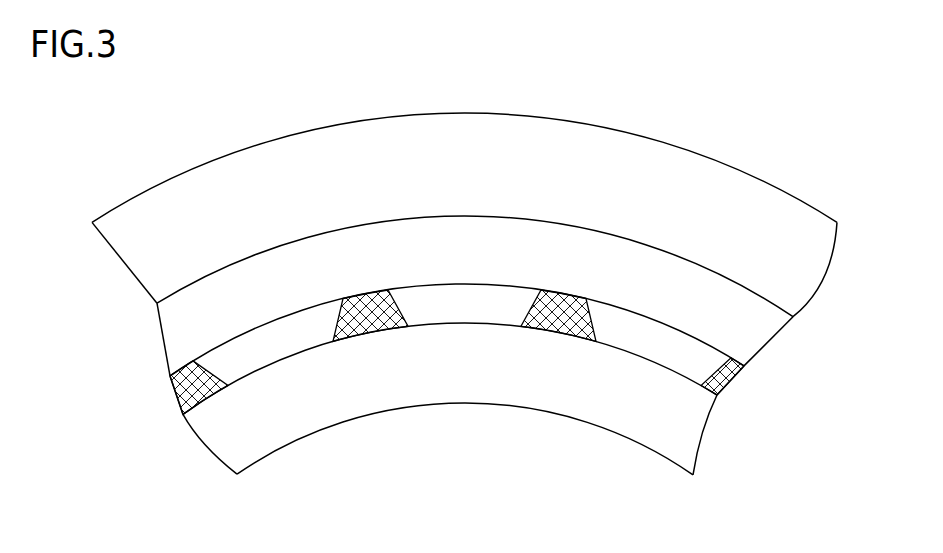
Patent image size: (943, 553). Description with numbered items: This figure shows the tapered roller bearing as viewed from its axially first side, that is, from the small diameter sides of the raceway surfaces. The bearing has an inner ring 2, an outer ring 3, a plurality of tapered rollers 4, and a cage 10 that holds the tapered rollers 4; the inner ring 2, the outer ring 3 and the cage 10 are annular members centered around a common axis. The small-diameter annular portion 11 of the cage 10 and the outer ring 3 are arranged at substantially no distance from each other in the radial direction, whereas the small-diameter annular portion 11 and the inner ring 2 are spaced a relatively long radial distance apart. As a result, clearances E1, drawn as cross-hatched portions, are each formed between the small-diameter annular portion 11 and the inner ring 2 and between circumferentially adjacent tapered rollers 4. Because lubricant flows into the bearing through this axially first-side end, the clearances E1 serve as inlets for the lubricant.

The inner ring 2 is at (428, 375).
The outer ring 3 is at (348, 142).
The tapered roller 4 is at (277, 347).
The cage 10 is at (302, 242).
The small-diameter annular portion 11 is at (478, 233).
The clearance E1 is at (178, 400).